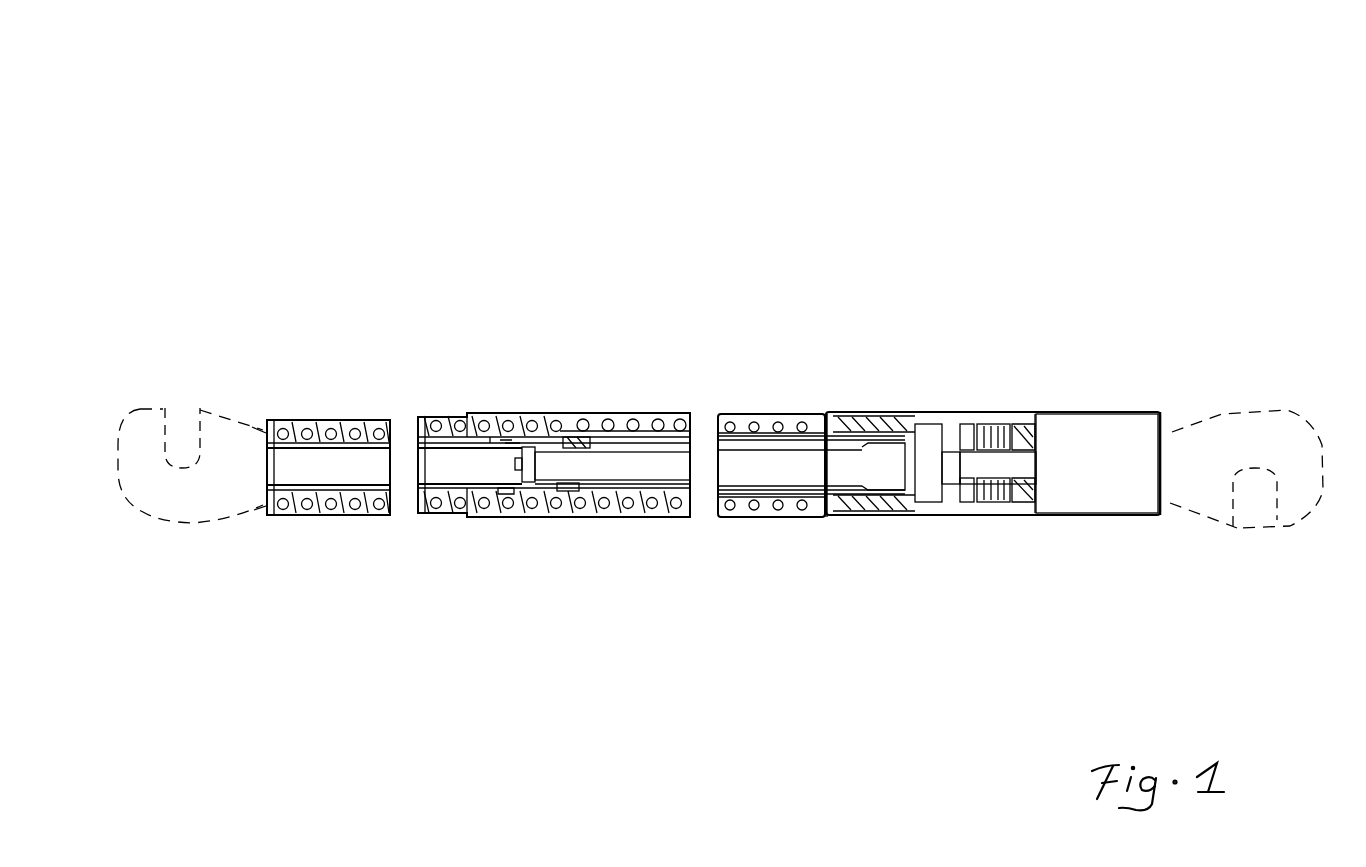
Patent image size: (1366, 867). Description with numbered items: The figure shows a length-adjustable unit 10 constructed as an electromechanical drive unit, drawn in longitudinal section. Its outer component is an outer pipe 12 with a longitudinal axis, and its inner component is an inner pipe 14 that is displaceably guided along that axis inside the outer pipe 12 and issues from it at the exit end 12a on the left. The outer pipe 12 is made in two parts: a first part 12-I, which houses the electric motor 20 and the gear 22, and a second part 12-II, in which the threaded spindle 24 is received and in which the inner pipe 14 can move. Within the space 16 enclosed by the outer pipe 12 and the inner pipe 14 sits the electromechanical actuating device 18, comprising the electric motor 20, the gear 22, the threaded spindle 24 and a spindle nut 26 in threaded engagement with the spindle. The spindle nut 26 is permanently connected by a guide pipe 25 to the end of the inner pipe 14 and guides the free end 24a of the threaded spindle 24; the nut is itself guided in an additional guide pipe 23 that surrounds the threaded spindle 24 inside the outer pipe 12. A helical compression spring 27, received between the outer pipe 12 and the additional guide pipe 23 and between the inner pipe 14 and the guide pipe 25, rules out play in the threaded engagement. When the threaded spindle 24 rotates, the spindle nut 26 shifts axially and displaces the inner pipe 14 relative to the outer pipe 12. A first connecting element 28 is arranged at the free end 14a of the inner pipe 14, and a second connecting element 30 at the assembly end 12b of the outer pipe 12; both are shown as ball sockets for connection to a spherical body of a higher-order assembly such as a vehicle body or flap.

The length-adjustable unit 10 is at (1190, 128).
The outer pipe 12 is at (752, 414).
The exit end 12a is at (468, 417).
The assembly end 12b is at (1160, 412).
The first part 12-I is at (1042, 472).
The second part 12-II is at (788, 517).
The inner pipe 14 is at (333, 478).
The free end 14a is at (266, 514).
The space 16 is at (557, 449).
The electromechanical actuating device 18 is at (847, 381).
The electric motor 20 is at (1090, 515).
The gear 22 is at (993, 517).
The additional guide pipe 23 is at (668, 413).
The threaded spindle 24 is at (675, 517).
The free end 24a is at (530, 440).
The guide pipe 25 is at (325, 420).
The spindle nut 26 is at (580, 517).
The helical compression spring 27 is at (352, 420).
The first connecting element 28 is at (150, 500).
The second connecting element 30 is at (1305, 512).